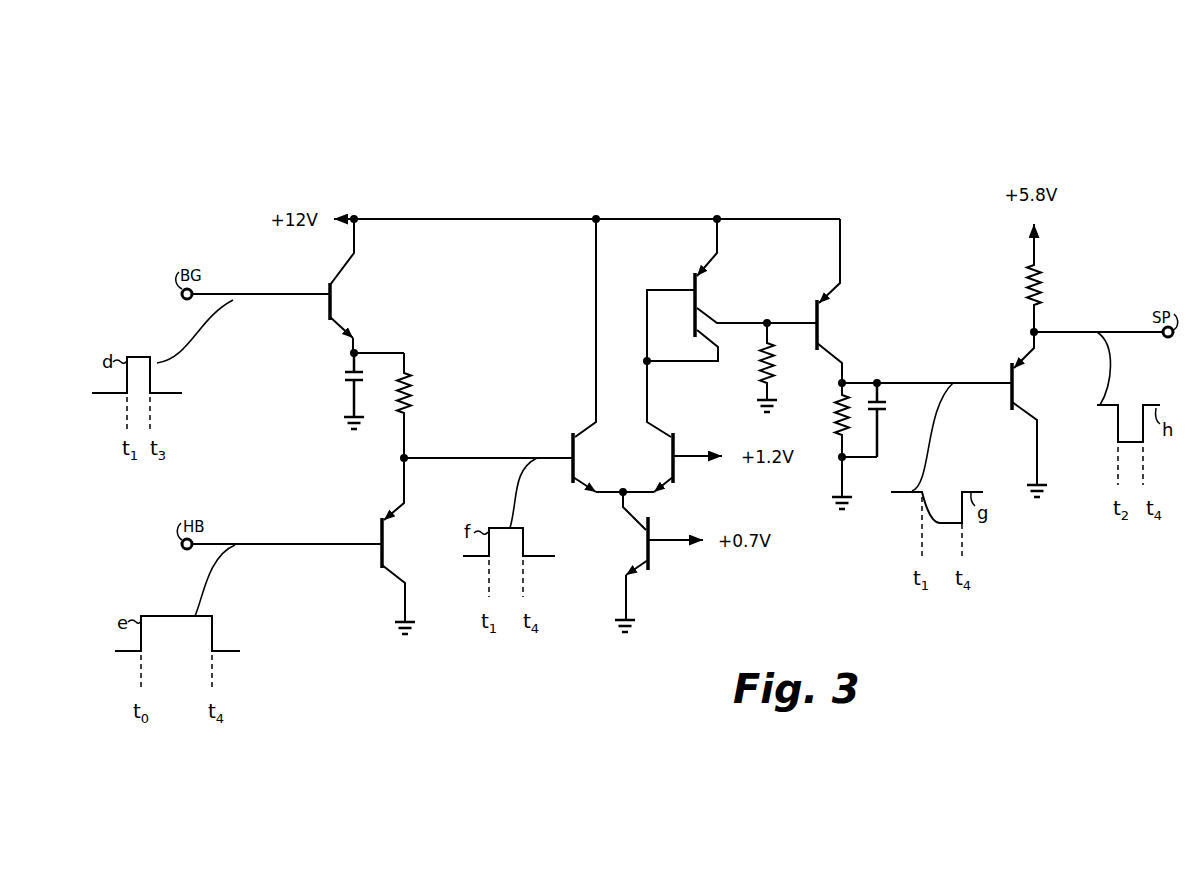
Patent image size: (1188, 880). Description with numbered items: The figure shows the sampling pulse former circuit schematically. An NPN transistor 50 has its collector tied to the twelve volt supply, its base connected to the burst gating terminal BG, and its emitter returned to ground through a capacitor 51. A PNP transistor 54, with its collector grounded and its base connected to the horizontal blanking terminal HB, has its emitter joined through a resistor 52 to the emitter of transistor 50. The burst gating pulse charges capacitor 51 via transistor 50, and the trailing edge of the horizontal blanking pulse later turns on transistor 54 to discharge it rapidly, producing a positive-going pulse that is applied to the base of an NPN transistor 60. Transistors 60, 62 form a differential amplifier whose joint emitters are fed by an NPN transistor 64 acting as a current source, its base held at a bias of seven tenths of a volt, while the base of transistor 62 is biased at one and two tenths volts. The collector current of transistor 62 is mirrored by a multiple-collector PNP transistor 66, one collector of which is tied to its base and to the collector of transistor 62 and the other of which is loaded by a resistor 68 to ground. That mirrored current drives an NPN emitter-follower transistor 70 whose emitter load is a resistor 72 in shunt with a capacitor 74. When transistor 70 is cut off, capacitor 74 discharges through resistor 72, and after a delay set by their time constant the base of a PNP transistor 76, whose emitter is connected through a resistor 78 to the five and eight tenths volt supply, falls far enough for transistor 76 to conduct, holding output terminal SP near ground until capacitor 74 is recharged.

The NPN transistor 50 is at (324, 283).
The capacitor 51 is at (348, 377).
The resistor 52 is at (410, 386).
The PNP transistor 54 is at (378, 559).
The NPN transistor 60 is at (571, 441).
The NPN transistor 62 is at (676, 442).
The NPN transistor 64 is at (654, 551).
The multiple-collector PNP transistor 66 is at (691, 272).
The resistor 68 is at (783, 367).
The NPN transistor 70 is at (814, 301).
The resistor 72 is at (836, 419).
The capacitor 74 is at (885, 406).
The PNP transistor 76 is at (1010, 371).
The resistor 78 is at (1027, 288).